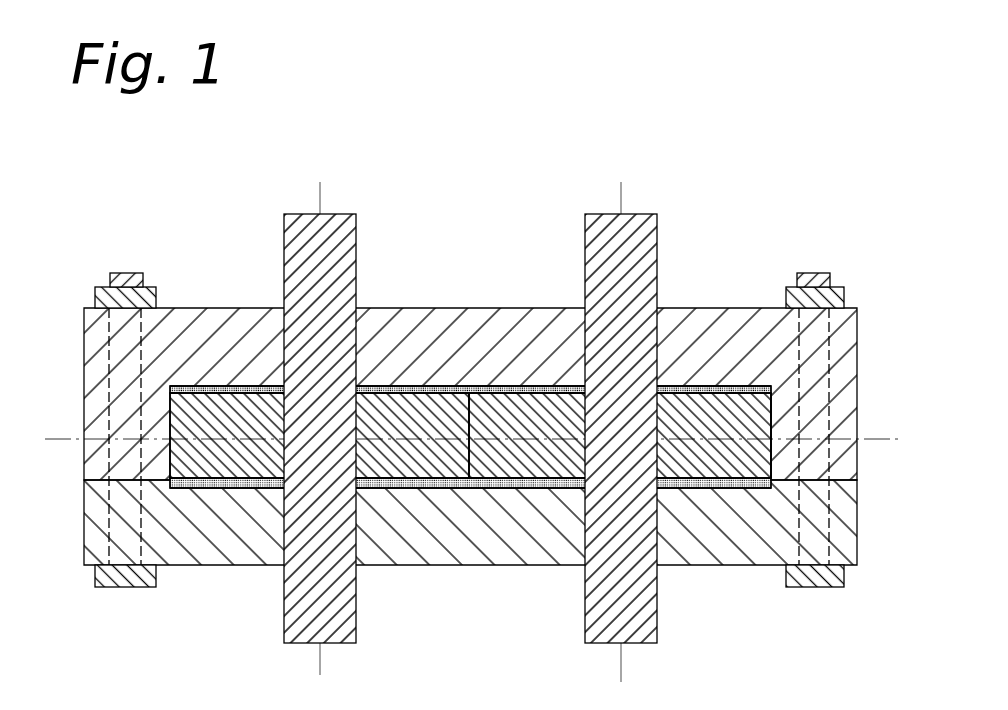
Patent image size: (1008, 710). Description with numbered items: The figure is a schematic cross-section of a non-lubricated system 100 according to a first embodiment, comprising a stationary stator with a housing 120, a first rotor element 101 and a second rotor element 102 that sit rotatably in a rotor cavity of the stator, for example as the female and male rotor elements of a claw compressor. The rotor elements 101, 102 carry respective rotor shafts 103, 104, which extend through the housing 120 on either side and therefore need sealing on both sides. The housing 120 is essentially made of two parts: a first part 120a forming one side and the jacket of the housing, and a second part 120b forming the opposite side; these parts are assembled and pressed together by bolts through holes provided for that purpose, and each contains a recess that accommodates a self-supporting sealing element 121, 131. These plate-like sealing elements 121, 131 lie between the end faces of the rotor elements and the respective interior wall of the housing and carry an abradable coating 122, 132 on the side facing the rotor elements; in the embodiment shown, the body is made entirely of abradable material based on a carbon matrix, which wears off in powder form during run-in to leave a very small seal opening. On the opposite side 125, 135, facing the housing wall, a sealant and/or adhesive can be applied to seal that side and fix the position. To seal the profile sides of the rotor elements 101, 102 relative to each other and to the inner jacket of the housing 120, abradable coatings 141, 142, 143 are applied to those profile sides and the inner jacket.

The non-lubricated system 100 is at (464, 401).
The first rotor element 101 is at (422, 427).
The second rotor element 102 is at (542, 427).
The rotor shaft 103 is at (341, 229).
The rotor shaft 104 is at (644, 229).
The housing 120 is at (470, 342).
The first part 120a is at (494, 358).
The second part 120b is at (540, 540).
The self-supporting sealing element 121 is at (222, 386).
The abradable coating 122 is at (464, 525).
The opposite side 125 is at (173, 387).
The self-supporting sealing element 131 is at (214, 488).
The abradable coating 132 is at (168, 478).
The opposite side 135 is at (182, 488).
The abradable coating 141 is at (168, 394).
The abradable coating 142 is at (469, 478).
The abradable coating 143 is at (771, 455).